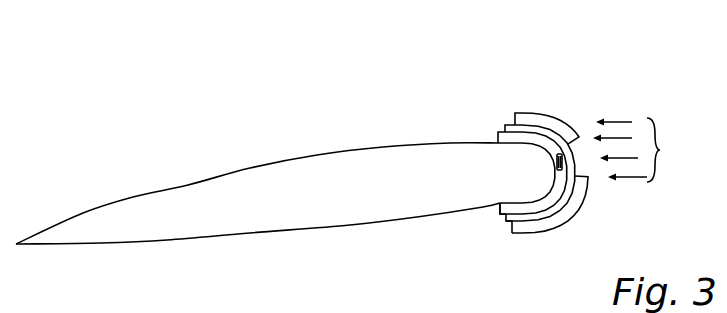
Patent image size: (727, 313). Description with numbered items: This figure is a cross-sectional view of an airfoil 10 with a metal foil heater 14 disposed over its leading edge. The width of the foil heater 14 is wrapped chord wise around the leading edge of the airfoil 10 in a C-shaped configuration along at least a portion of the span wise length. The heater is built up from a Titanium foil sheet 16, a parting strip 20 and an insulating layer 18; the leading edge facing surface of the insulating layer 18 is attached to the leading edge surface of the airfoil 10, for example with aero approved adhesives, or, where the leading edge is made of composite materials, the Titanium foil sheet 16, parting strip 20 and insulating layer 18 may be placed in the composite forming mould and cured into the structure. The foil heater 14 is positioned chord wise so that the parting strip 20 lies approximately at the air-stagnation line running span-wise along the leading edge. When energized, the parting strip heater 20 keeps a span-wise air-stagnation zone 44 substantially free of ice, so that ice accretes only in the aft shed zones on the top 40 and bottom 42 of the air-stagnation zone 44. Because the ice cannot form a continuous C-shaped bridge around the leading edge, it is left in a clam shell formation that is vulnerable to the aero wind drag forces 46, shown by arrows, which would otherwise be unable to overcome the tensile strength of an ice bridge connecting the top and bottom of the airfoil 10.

The airfoil 10 is at (188, 192).
The foil heater 14 is at (485, 126).
The Titanium foil sheet 16 is at (503, 217).
The insulating layer 18 is at (500, 207).
The parting strip heater 20 is at (557, 160).
The top shed zone 40 is at (540, 112).
The bottom shed zone 42 is at (578, 205).
The air-stagnation zone 44 is at (577, 145).
The aero wind drag forces 46 is at (638, 150).